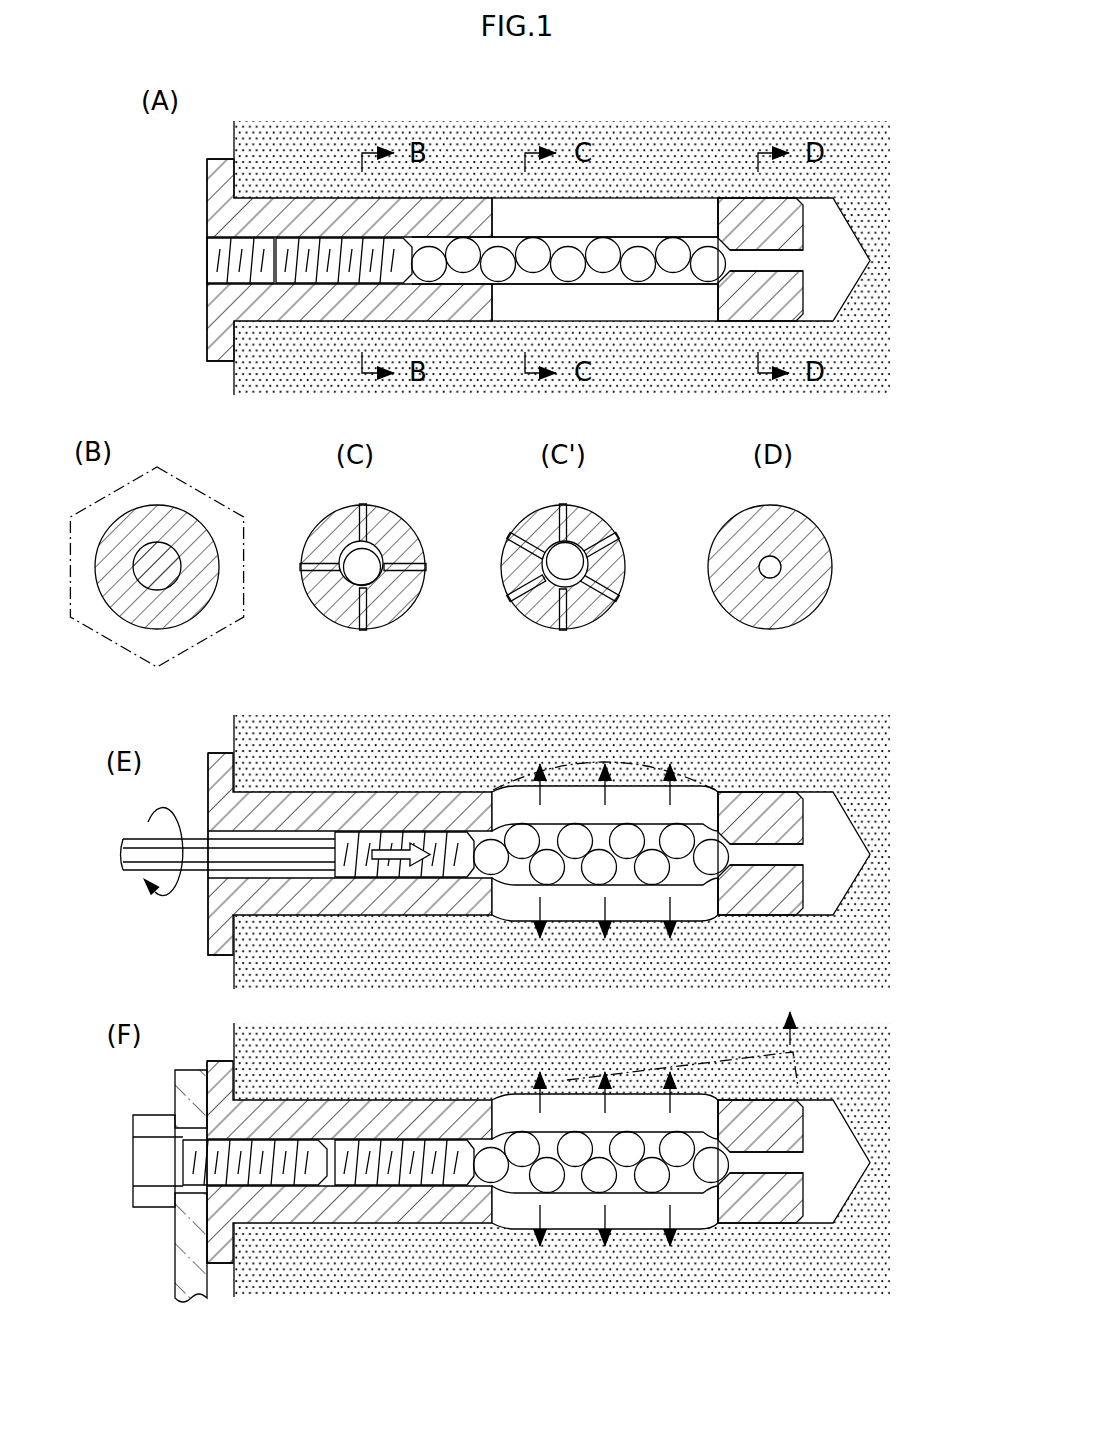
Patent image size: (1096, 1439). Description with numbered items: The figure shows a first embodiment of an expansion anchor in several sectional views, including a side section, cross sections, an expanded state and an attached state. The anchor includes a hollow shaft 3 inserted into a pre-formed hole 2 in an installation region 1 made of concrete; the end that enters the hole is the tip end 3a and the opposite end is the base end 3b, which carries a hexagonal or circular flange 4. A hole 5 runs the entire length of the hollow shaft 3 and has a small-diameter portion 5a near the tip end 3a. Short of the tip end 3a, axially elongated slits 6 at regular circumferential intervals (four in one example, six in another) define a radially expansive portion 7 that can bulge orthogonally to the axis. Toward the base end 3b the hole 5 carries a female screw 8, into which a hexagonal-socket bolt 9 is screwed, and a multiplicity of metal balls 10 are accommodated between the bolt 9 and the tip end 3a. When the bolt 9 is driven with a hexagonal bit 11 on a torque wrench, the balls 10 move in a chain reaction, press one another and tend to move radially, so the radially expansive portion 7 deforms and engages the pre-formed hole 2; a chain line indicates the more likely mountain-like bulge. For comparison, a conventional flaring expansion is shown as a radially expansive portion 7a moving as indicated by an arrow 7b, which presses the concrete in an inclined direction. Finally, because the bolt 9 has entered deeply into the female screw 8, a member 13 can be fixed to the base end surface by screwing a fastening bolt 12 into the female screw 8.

The installation region 1 is at (273, 170).
The pre-formed hole 2 is at (657, 198).
The hollow shaft 3 is at (312, 218).
The tip end 3a is at (740, 310).
The base end 3b is at (218, 296).
The flange 4 is at (212, 348).
The hole 5 is at (522, 284).
The small-diameter portion 5a is at (803, 262).
The slits 6 is at (633, 215).
The radially expansive portion 7 is at (622, 348).
The radially expansive portion of conventional anchor 7a is at (677, 1067).
The arrow 7b is at (795, 1033).
The female screw 8 is at (268, 287).
The hexagonal-socket bolt 9 is at (326, 287).
The metal balls 10 is at (530, 248).
The hexagonal bit 11 is at (138, 868).
The fastening bolt 12 is at (150, 1123).
The member 13 is at (183, 1223).